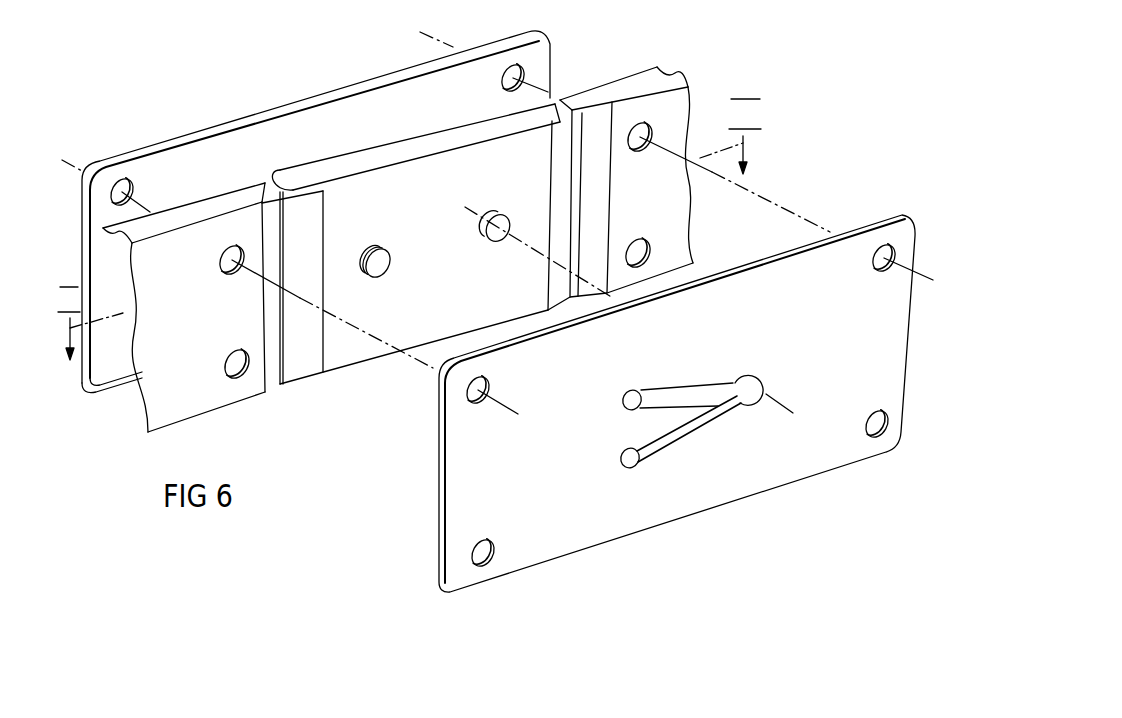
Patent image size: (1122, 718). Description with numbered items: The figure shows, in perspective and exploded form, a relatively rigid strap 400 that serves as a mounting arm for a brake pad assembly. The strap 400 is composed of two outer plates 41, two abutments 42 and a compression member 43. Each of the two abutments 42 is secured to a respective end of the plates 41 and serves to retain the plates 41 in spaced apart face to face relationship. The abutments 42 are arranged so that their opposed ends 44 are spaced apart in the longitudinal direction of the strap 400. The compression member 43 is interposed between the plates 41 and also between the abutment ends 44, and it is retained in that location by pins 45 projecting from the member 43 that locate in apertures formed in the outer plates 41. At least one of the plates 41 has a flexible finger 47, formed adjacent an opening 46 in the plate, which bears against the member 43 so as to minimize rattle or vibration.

The strap 400 is at (368, 475).
The outer plates 41 is at (318, 123).
The abutments 42 is at (192, 215).
The compression member 43 is at (360, 352).
The opposed ends 44 is at (573, 137).
The pins 45 is at (350, 245).
The slot 46 is at (745, 396).
The flexible finger 47 is at (680, 412).